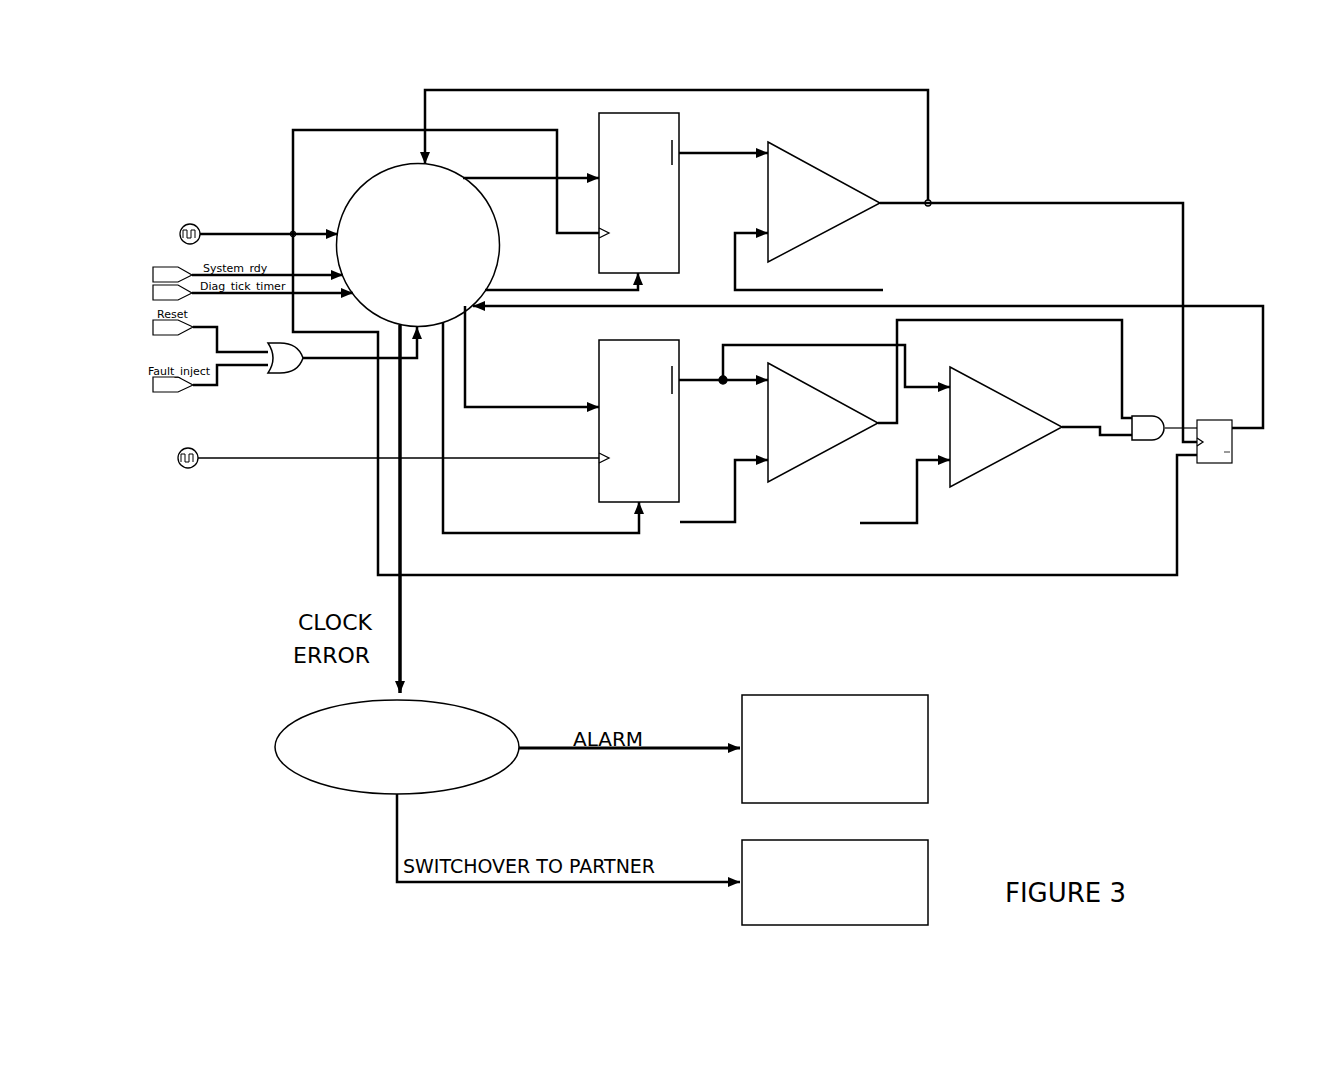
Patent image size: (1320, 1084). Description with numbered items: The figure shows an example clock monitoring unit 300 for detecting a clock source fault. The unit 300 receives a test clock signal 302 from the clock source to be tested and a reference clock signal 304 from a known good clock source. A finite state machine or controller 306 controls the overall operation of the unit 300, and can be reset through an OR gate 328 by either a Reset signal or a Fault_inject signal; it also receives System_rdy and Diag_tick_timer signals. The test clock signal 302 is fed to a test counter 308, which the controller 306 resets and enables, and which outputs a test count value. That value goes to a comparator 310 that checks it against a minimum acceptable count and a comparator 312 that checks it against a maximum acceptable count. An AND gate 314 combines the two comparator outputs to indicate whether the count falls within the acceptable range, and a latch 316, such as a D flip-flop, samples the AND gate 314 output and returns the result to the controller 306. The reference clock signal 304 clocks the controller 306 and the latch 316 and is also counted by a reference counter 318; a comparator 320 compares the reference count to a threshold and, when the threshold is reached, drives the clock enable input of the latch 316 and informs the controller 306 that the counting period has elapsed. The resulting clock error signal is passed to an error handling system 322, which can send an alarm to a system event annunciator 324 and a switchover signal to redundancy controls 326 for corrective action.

The clock monitoring unit 300 is at (1072, 124).
The test clock signal 302 is at (199, 471).
The reference clock signal 304 is at (182, 197).
The finite state machine or controller 306 is at (372, 178).
The test counter 308 is at (596, 488).
The comparator 310 is at (785, 473).
The comparator 312 is at (982, 470).
The AND gate 314 is at (1143, 412).
The latch 316 is at (1212, 466).
The reference counter 318 is at (596, 256).
The comparator 320 is at (826, 170).
The error handling system 322 is at (362, 796).
The system event annunciator 324 is at (818, 692).
The redundancy controls 326 is at (757, 837).
The OR gate 328 is at (284, 373).